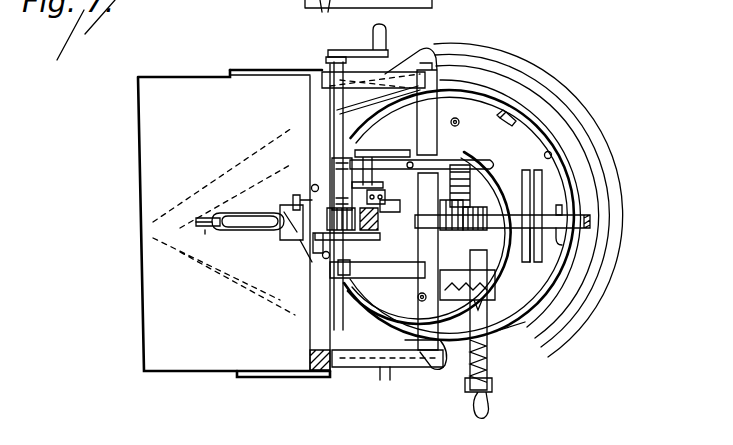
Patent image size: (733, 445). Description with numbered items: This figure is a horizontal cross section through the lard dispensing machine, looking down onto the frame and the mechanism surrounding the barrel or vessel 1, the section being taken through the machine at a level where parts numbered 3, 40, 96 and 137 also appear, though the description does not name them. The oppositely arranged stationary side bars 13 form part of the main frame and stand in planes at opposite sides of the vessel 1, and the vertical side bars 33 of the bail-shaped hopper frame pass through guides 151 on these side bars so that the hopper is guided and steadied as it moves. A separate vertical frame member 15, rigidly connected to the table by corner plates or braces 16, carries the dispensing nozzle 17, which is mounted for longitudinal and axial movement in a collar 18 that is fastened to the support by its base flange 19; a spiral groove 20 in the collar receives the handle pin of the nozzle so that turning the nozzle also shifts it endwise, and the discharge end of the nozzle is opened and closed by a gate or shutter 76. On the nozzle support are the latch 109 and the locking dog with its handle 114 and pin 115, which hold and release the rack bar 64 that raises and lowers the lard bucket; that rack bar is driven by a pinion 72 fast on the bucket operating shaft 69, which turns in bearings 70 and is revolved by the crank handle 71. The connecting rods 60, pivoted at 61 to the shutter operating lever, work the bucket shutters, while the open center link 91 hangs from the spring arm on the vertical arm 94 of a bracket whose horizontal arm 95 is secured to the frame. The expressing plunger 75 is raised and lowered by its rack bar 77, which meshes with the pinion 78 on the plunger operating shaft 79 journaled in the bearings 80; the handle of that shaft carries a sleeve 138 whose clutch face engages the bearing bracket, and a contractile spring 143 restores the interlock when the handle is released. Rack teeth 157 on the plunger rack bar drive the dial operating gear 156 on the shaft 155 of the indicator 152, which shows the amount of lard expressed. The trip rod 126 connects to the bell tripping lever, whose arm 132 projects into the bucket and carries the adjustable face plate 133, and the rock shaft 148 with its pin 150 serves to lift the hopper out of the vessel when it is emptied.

The barrel or vessel 1 is at (588, 268).
The base bar 3 is at (368, 368).
The stationary side bars 13 is at (428, 80).
The frame member 15 is at (312, 338).
The corner plates or braces 16 is at (275, 70).
The dispensing nozzle 17 is at (240, 226).
The collar 18 is at (280, 204).
The base flange 19 is at (300, 260).
The spiral groove 20 is at (285, 232).
The side bars of bail-shaped frame 33 is at (490, 82).
The screw 40 is at (553, 155).
The connecting rods 60 is at (492, 300).
The pivotal connection 61 is at (492, 410).
The rack bar 64 is at (379, 217).
The bucket operating shaft 69 is at (333, 65).
The bearings 70 is at (330, 130).
The operating crank handle 71 is at (388, 42).
The pinion 72 is at (290, 256).
The expressing plunger 75 is at (590, 280).
The gate or shutter 76 is at (205, 232).
The plunger rack bar 77 is at (440, 240).
The pinion 78 is at (476, 203).
The plunger operating shaft 79 is at (525, 92).
The bearings 80 is at (386, 145).
The open center link 91 is at (420, 236).
The vertical arm of bracket 94 is at (305, 4).
The horizontal arm of bracket 95 is at (385, 368).
The nut 96 is at (420, 212).
The latch 109 is at (343, 367).
The handle 114 is at (300, 200).
The pin 115 is at (372, 278).
The trip rod 126 is at (592, 220).
The arm of bell tripping lever 132 is at (542, 255).
The adjustable face plate 133 is at (526, 195).
The collar 137 is at (555, 232).
The sleeve 138 is at (525, 322).
The contractile spring 143 is at (500, 358).
The rock shaft 148 is at (535, 108).
The pin 150 is at (578, 105).
The guides 151 is at (478, 68).
The indicator 152 is at (292, 147).
The shaft 155 is at (370, 158).
The dial operating gear 156 is at (565, 125).
The rack teeth 157 is at (568, 142).